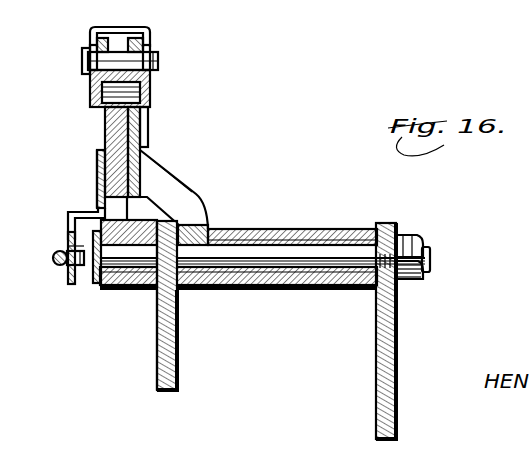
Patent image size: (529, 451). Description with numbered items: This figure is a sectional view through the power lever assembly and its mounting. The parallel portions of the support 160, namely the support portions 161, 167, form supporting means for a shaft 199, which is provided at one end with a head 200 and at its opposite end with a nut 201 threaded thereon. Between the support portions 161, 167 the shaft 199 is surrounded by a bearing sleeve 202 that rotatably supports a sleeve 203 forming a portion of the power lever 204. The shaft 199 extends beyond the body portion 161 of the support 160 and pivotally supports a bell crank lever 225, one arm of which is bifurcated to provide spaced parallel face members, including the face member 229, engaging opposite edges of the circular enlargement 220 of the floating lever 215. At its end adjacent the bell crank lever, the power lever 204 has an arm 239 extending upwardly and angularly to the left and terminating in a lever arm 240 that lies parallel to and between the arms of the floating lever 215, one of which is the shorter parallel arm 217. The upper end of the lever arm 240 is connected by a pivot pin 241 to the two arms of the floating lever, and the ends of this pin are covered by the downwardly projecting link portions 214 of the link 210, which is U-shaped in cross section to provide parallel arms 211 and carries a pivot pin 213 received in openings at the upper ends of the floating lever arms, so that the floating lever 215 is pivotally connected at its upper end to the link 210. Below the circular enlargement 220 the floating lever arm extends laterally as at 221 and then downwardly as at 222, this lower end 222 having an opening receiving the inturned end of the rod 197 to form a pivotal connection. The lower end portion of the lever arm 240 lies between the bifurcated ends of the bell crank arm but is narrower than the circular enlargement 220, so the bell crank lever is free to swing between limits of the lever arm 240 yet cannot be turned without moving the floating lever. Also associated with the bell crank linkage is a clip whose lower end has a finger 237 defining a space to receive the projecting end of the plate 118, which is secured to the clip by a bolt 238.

The bolt 238 is at (56, 0).
The finger 237 is at (230, 2).
The plate 118 is at (213, 7).
The link 210 is at (143, 26).
The pivot pin 213 is at (88, 56).
The parallel arms 211 is at (95, 84).
The pivot pin 241 is at (120, 92).
The downwardly extending link portions 214 is at (90, 108).
The lever arm 240 is at (125, 124).
The shorter parallel arm 217 is at (140, 143).
The circular enlargement 220 is at (100, 162).
The face member 229 is at (99, 185).
The lateral extension of lever arm 221 is at (85, 212).
The downwardly extending lower end 222 is at (68, 231).
The floating lever 215 is at (67, 245).
The rod 197 is at (55, 265).
The head 200 is at (96, 281).
The bell crank lever 225 is at (119, 290).
The support portion 161 is at (159, 341).
The support 160 is at (156, 367).
The sleeve 203 is at (270, 282).
The shaft 199 is at (245, 250).
The bearing sleeve 202 is at (305, 238).
The power lever 204 is at (205, 211).
The arm 239 is at (186, 191).
The nut 201 is at (410, 236).
The support portion 167 is at (398, 318).